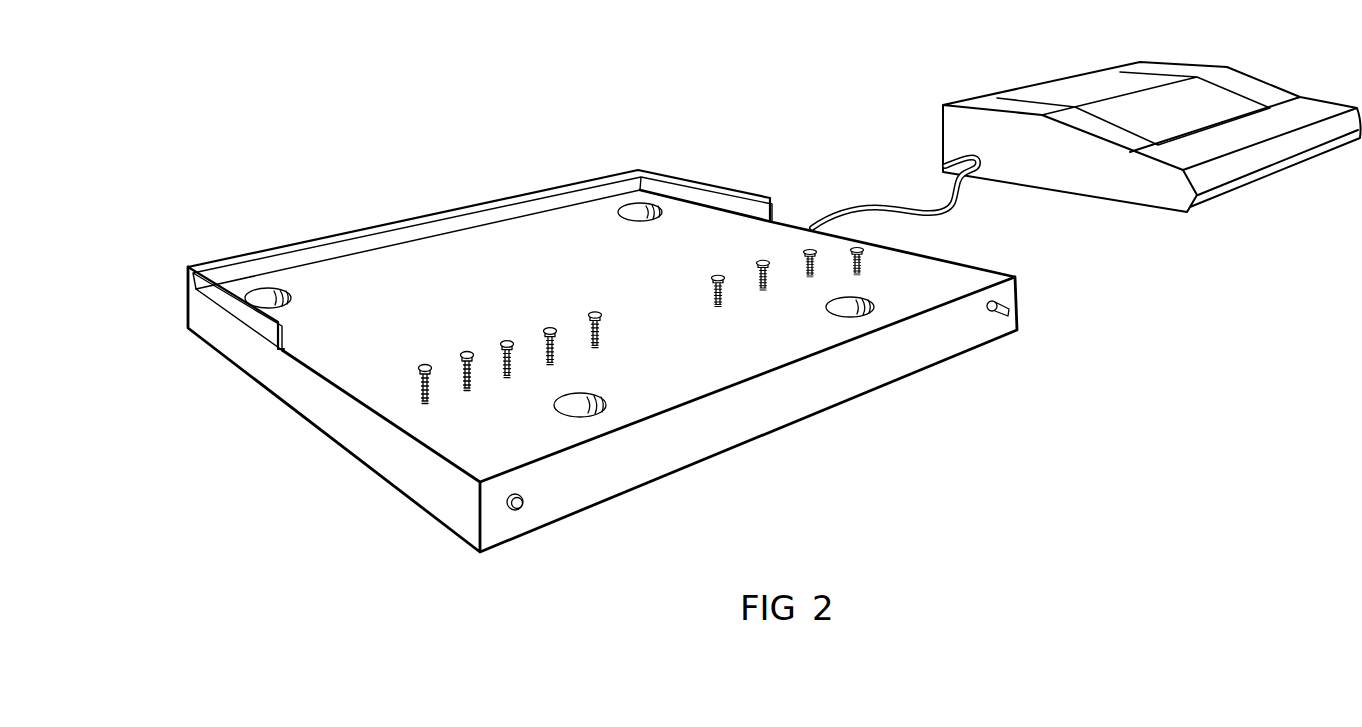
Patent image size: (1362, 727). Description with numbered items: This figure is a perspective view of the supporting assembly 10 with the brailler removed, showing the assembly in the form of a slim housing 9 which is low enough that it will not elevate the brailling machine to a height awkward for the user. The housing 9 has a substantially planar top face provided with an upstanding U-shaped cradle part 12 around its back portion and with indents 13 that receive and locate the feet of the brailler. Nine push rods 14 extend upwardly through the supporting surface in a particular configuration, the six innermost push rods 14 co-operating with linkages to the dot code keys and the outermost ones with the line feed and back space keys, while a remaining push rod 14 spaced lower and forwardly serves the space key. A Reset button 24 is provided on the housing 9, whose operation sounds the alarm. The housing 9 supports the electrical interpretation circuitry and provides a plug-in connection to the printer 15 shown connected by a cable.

The slim housing 9 is at (773, 410).
The supporting assembly 10 is at (275, 448).
The U-shaped cradle part 12 is at (438, 225).
The indents 13 is at (262, 296).
The push rods 14 is at (595, 312).
The printer 15 is at (1026, 72).
The Reset button 24 is at (1002, 316).